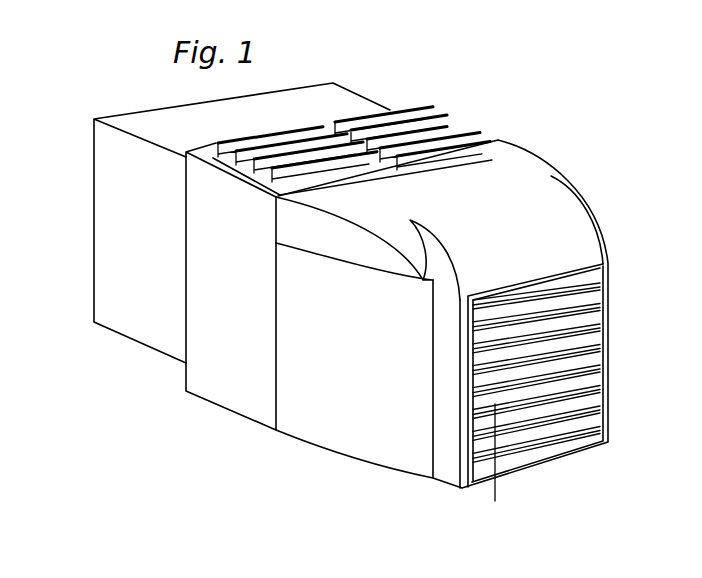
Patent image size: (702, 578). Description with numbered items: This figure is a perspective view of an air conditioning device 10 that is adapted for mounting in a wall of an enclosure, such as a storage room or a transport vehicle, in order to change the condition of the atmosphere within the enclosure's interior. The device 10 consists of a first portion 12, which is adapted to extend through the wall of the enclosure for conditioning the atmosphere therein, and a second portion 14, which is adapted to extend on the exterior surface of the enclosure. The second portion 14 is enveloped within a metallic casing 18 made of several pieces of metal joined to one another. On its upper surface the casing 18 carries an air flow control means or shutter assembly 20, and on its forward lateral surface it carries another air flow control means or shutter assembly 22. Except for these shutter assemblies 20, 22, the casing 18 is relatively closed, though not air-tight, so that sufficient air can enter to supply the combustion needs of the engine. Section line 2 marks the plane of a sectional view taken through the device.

The air conditioning device 10 is at (82, 160).
The first portion 12 is at (147, 341).
The second portion 14 is at (410, 476).
The metallic casing 18 is at (308, 434).
The shutter assembly 20 is at (340, 175).
The shutter assembly 22 is at (528, 279).
The section line 2- 2 is at (232, 122).